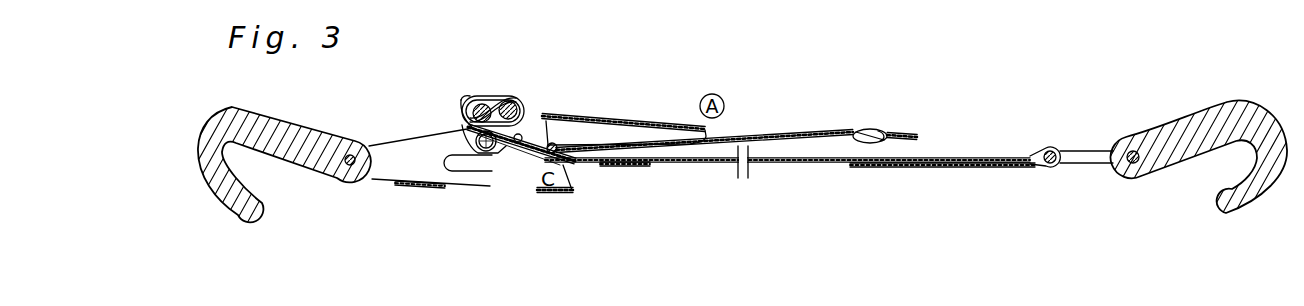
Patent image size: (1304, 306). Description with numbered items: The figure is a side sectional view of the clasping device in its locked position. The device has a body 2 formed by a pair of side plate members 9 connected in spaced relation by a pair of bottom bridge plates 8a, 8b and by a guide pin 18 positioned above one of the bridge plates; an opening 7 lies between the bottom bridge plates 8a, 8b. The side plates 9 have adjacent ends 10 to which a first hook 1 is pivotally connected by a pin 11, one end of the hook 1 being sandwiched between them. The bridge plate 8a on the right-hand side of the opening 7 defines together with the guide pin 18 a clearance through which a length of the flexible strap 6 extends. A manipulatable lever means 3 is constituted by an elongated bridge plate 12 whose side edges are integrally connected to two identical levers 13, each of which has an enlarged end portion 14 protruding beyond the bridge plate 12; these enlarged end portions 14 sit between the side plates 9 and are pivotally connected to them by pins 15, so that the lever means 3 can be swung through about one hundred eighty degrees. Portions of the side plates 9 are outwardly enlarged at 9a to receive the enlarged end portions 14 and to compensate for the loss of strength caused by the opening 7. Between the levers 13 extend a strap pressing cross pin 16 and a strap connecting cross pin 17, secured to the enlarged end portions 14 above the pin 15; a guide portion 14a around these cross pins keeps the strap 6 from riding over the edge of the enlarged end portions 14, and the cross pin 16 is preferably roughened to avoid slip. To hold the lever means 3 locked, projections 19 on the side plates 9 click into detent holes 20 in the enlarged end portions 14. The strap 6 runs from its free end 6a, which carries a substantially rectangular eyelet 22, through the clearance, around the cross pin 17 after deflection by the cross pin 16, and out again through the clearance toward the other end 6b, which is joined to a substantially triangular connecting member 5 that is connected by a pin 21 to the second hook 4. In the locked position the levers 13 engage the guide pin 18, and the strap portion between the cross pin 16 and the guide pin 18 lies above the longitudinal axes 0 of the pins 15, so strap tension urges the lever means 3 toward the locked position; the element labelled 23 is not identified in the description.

The first hook 1 is at (265, 120).
The body 2 is at (578, 204).
The manipulatable lever means 3 is at (648, 119).
The second hook 4 is at (1258, 115).
The connecting member 5 is at (1085, 163).
The flexible strap 6 is at (815, 163).
The free end of the strap 6a is at (862, 132).
The other end of the strap 6b is at (1040, 166).
The opening 7 is at (517, 143).
The bottom bridge plate 8a is at (563, 167).
The bottom bridge plate 8b is at (412, 187).
The side plate members 9 is at (407, 150).
The outwardly enlarged portions of the side plates 9a is at (457, 163).
The adjacent ends of the side plates 10 is at (377, 168).
The pin 11 is at (343, 165).
The elongated bridge plate 12 is at (618, 125).
The levers 13 is at (672, 137).
The enlarged end portion 14 is at (515, 115).
The guide portion 14a is at (462, 107).
The pins 15 is at (480, 157).
The cross pin 16 is at (472, 95).
The cross pin 17 is at (505, 96).
The guide pin 18 is at (568, 167).
The projections 19 is at (560, 193).
The detent holes 20 is at (545, 128).
The pin 21 is at (1133, 163).
The eyelet 22 is at (915, 134).
The strap fold 23 is at (882, 135).
The longitudinal axes of the pins 0 is at (490, 148).